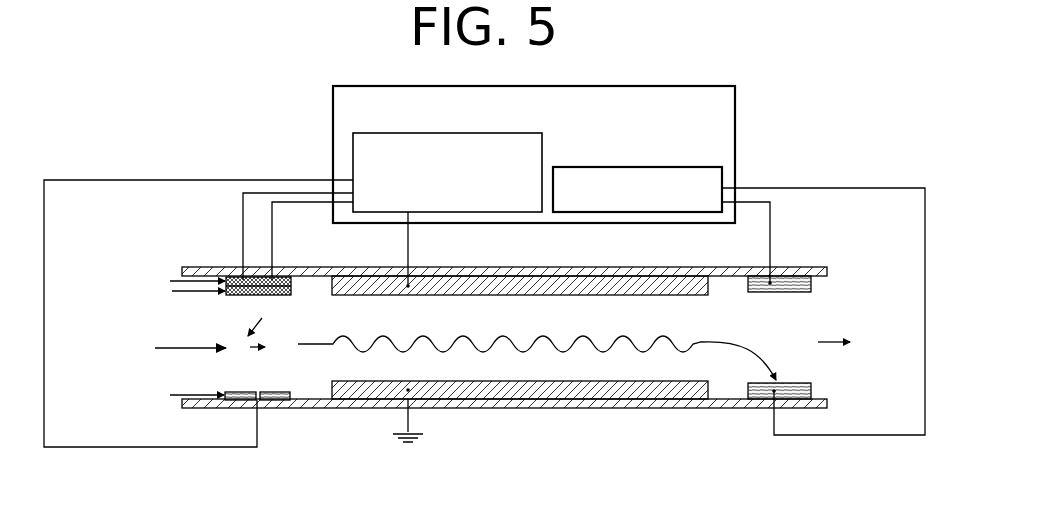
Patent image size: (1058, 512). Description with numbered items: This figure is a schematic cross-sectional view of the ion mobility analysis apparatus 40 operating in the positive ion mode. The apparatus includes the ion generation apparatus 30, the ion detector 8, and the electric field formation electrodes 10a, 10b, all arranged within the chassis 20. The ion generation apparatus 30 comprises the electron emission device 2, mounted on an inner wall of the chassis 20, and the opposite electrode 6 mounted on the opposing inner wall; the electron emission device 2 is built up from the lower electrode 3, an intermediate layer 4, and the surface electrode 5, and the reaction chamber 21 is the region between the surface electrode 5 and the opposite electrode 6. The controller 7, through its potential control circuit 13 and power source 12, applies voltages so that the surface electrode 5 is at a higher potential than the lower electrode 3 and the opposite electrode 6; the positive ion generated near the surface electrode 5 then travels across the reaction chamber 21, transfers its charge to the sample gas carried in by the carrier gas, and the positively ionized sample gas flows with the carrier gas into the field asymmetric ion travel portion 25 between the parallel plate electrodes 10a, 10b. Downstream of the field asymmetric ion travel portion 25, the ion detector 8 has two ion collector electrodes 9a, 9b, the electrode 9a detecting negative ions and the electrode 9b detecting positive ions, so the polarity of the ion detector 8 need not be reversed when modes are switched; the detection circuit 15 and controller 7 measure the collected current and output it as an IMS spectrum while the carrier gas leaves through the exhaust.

The ion mobility analysis apparatus 40 is at (830, 152).
The controller 7 is at (586, 276).
The potential control circuit 13 is at (447, 172).
The power source 12 is at (447, 172).
The detection circuit 15 is at (637, 189).
The ion detector 8 is at (696, 316).
The ion collector electrode 9a is at (790, 282).
The ion collector electrode 9b is at (774, 393).
The chassis 20 is at (599, 268).
The electric field formation electrode 10a is at (654, 283).
The electric field formation electrode 10b is at (652, 392).
The ion generation apparatus 30 is at (270, 291).
The electron emission device 2 is at (222, 140).
The lower electrode 3 is at (232, 280).
The second electrode layer 4 is at (256, 280).
The surface electrode 5 is at (280, 280).
The opposite electrode 6 is at (277, 412).
The reaction chamber 21 is at (253, 362).
The field asymmetric ion travel portion 25 is at (497, 357).